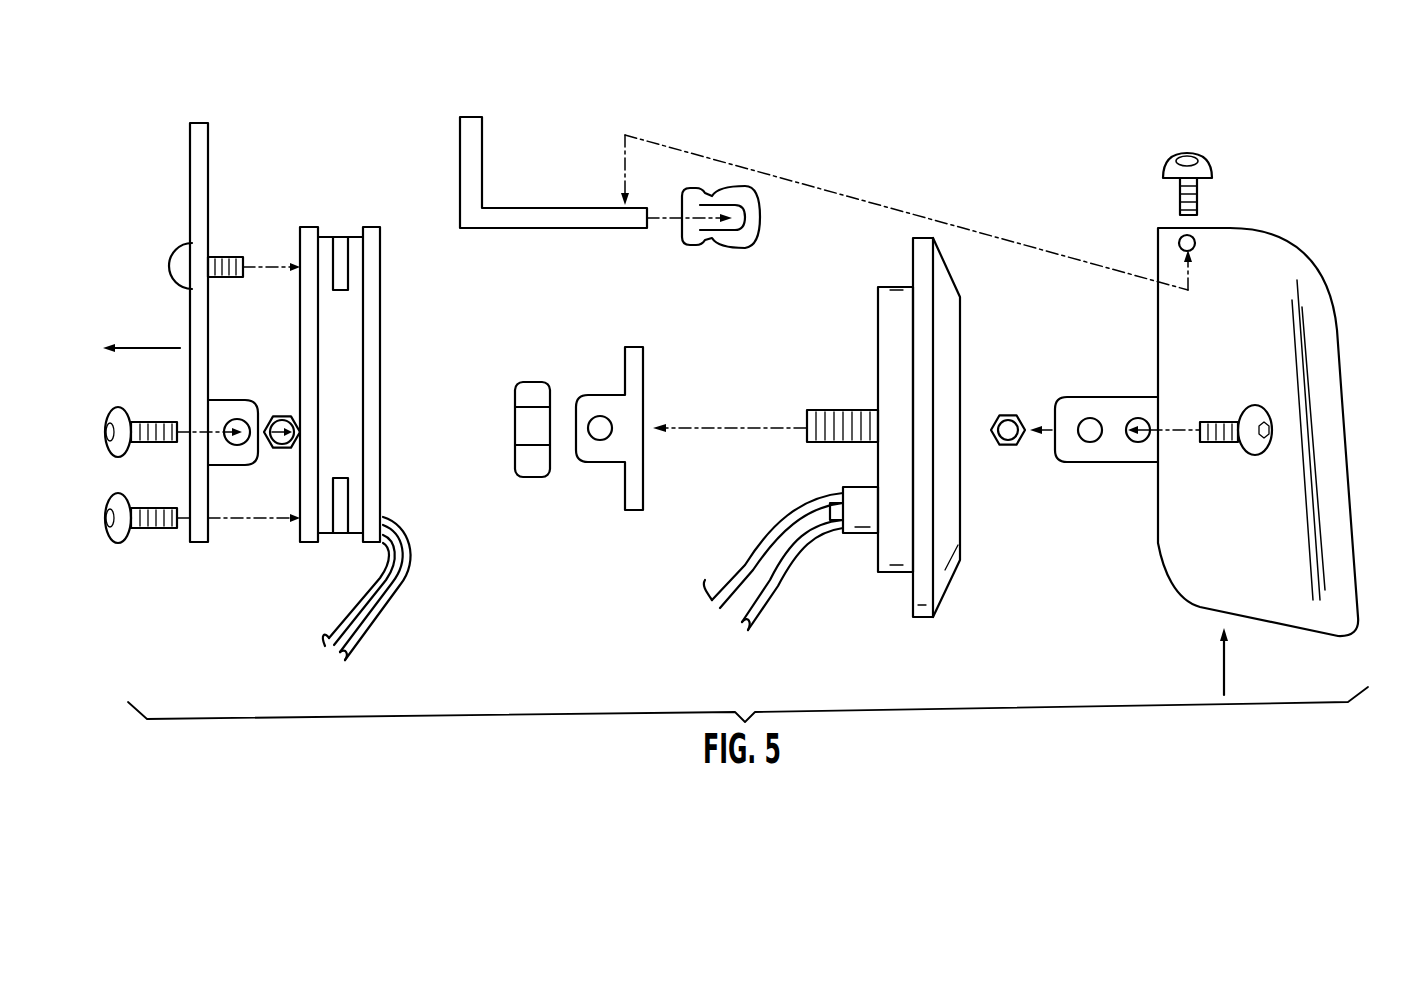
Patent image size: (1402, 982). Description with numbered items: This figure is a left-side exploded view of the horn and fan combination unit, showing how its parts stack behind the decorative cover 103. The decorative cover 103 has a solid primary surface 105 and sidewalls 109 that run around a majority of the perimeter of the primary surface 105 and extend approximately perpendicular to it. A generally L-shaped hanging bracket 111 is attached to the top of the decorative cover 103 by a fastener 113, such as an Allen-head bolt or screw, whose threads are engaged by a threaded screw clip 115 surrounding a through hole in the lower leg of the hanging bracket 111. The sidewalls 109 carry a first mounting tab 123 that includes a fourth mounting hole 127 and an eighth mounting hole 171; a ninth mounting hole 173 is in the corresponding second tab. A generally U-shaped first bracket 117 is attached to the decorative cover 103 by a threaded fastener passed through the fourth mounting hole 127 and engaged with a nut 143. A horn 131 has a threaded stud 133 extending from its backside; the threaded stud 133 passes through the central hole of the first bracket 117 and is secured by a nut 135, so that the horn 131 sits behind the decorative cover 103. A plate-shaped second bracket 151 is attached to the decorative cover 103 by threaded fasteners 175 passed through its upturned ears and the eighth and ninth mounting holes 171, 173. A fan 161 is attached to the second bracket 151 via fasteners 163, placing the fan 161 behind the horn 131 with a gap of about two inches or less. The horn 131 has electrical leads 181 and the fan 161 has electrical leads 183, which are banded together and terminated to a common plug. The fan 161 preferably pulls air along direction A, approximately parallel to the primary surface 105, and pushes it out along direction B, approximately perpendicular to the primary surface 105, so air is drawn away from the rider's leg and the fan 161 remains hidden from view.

The decorative cover 103 is at (1305, 228).
The primary surface 105 is at (1340, 433).
The sidewalls 109 is at (1211, 514).
The hanging bracket 111 is at (477, 170).
The fastener 113 is at (1206, 155).
The threaded screw clip 115 is at (745, 244).
The first bracket 117 is at (641, 377).
The first mounting tab 123 is at (1110, 398).
The fourth mounting hole 127 is at (1133, 447).
The horn 131 is at (955, 582).
The threaded stud 133 is at (822, 410).
The nut 135 is at (538, 380).
The nut 143 is at (1008, 448).
The second bracket 151 is at (210, 186).
The fan 161 is at (378, 318).
The fasteners 163 is at (180, 260).
The eighth mounting hole 171 is at (1085, 447).
The ninth mounting hole 173 is at (283, 414).
The threaded fasteners 175 is at (124, 415).
The electrical leads 181 is at (750, 590).
The electrical leads 183 is at (395, 603).
The direction A is at (1224, 680).
The direction B is at (165, 347).